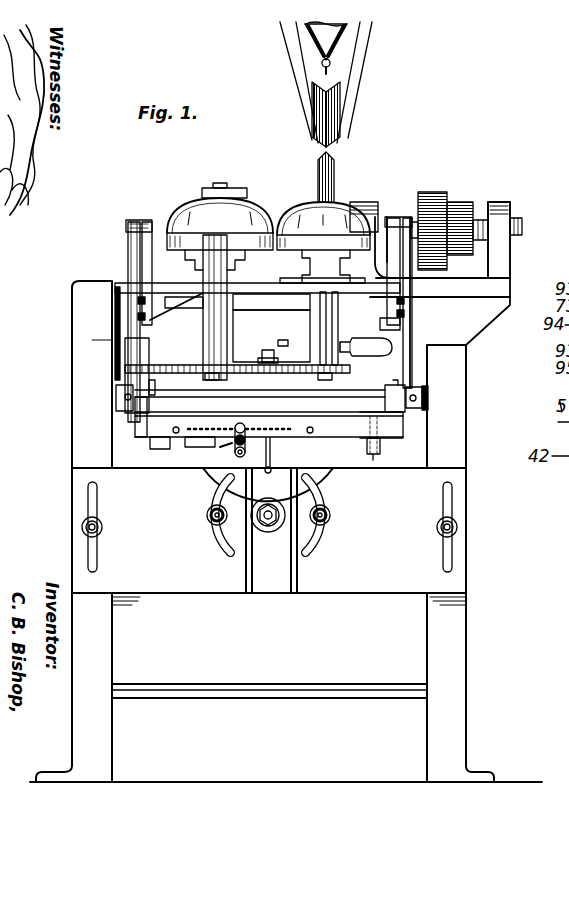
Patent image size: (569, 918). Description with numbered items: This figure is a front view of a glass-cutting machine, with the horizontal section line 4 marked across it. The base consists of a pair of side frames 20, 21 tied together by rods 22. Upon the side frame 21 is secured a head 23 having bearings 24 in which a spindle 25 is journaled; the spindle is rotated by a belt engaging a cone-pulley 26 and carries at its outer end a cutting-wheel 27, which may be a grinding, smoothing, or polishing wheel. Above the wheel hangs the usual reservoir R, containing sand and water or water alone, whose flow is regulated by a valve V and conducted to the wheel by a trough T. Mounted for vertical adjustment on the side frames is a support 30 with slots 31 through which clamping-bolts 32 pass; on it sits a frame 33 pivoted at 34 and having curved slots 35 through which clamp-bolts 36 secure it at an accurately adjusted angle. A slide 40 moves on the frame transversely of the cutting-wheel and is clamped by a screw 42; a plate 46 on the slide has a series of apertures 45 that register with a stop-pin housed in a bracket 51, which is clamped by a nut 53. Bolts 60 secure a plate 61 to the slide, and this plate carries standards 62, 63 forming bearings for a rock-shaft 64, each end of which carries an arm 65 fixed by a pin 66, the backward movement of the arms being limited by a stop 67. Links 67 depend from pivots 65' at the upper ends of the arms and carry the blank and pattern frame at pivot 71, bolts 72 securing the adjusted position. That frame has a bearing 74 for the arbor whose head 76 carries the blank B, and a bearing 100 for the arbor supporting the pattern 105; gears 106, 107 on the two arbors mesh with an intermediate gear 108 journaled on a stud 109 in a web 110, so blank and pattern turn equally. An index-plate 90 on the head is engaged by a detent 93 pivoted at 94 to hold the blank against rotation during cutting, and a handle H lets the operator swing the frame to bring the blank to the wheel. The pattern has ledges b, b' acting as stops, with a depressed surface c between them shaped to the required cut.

The section line 4 is at (92, 340).
The side frame 20 is at (80, 392).
The side frame 21 is at (455, 437).
The rods 22 is at (292, 685).
The head 23 is at (492, 288).
The bearings 24 is at (366, 203).
The spindle 25 is at (522, 226).
The cone-pulley 26 is at (458, 196).
The cutting-wheel 27 is at (334, 170).
The support 30 is at (269, 530).
The slots 31 is at (97, 555).
The clamping-bolts 32 is at (102, 525).
The frame 33 is at (337, 502).
The pivot 34 is at (268, 532).
The curved slots 35 is at (213, 537).
The clamp-bolts 36 is at (207, 515).
The slide 40 is at (386, 430).
The screw 42 is at (272, 443).
The apertures 45 is at (192, 448).
The plate 46 is at (172, 450).
The bracket 51 is at (234, 458).
The nut 53 is at (235, 446).
The bolts 60 is at (373, 456).
The plate 61 is at (135, 425).
The standard 62 is at (153, 384).
The standard 63 is at (393, 380).
The rock-shaft 64 is at (422, 395).
The arms 65 is at (272, 320).
The pivots 65' is at (121, 220).
The pin 66 is at (118, 410).
The stop 67 is at (147, 268).
The pivot 71 is at (138, 317).
The bolts 72 is at (138, 300).
The bearing 74 is at (320, 334).
The head 76 is at (264, 288).
The index-plate 90 is at (288, 278).
The detent 93 is at (318, 345).
The pivot 94 is at (310, 306).
The bearing 100 is at (205, 348).
The pattern 105 is at (193, 208).
The gear 106 is at (340, 374).
The gear 107 is at (200, 376).
The intermediate gear 108 is at (245, 374).
The stud 109 is at (272, 350).
The web 110 is at (243, 362).
The blank B is at (305, 202).
The ledge b is at (310, 213).
The ledge b' is at (210, 231).
The pattern surface c is at (220, 215).
The handle H is at (366, 337).
The reservoir R is at (344, 40).
The trough T is at (330, 108).
The valve V is at (331, 62).